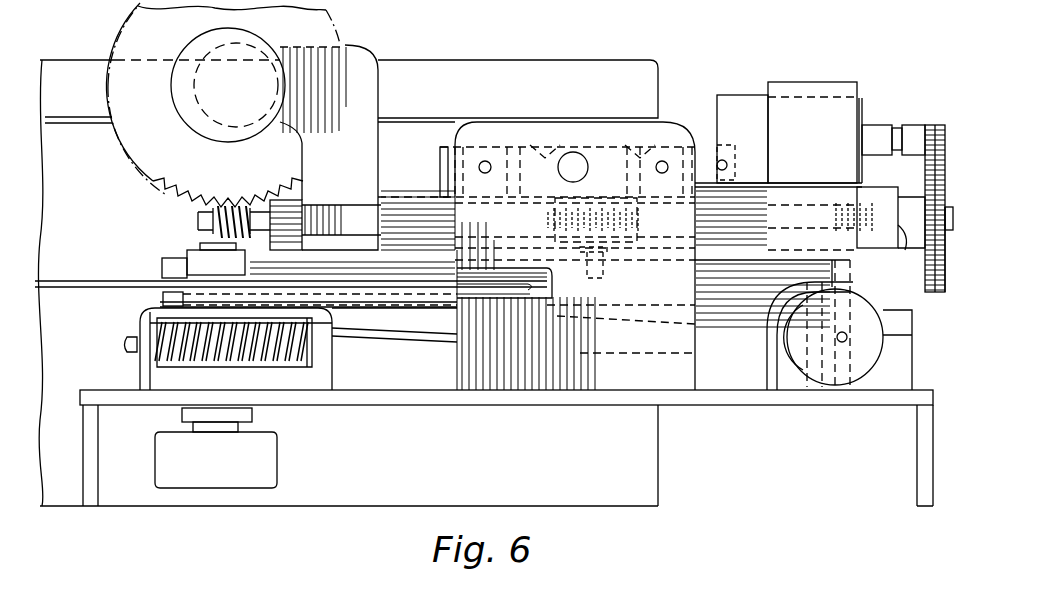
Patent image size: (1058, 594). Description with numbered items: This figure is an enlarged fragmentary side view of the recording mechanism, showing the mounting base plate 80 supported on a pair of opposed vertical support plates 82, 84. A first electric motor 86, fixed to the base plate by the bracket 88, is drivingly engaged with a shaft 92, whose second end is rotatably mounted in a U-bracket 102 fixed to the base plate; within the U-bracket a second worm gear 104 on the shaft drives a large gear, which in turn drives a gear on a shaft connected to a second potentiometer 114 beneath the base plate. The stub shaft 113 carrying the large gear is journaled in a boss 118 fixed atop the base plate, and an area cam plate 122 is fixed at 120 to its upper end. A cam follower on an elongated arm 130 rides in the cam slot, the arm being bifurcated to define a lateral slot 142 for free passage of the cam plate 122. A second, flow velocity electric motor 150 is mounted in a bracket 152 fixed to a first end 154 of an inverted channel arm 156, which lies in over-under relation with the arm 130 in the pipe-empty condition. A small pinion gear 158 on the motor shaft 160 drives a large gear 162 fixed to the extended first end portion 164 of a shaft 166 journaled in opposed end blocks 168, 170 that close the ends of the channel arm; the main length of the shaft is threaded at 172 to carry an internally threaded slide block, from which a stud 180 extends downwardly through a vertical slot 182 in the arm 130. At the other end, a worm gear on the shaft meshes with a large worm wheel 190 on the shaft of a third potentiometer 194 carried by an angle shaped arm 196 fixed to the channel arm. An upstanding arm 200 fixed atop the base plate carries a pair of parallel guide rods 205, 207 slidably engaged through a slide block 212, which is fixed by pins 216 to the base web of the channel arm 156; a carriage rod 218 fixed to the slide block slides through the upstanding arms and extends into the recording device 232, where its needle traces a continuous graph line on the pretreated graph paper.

The mounting base plate 80 is at (432, 405).
The vertical support plate 82 is at (95, 462).
The vertical support plate 84 is at (917, 446).
The first electric motor 86 is at (870, 352).
The bracket 88 is at (786, 372).
The shaft 92 is at (407, 342).
The U-bracket 102 is at (332, 356).
The second worm gear 104 is at (290, 360).
The stub shaft 113 is at (205, 247).
The second potentiometer 114 is at (228, 470).
The boss 118 is at (202, 364).
The fixing point 120 is at (163, 298).
The area cam plate 122 is at (112, 268).
The elongated arm 130 is at (400, 308).
The lateral slot 142 is at (537, 287).
The flow velocity electric motor 150 is at (752, 126).
The bracket 152 is at (836, 65).
The first end 154 is at (882, 197).
The inverted channel arm 156 is at (410, 190).
The small pinion gear 158 is at (932, 124).
The motor shaft 160 is at (897, 127).
The large gear 162 is at (938, 294).
The extended first end portion 164 is at (922, 262).
The shaft 166 is at (866, 250).
The end block 168 is at (860, 262).
The end block 170 is at (300, 188).
The threaded portion 172 is at (648, 216).
The stud 180 is at (608, 270).
The vertical slot 182 is at (448, 297).
The large worm wheel 190 is at (175, 190).
The third potentiometer 194 is at (237, 135).
The angle shaped arm 196 is at (357, 133).
The upstanding arm 200 is at (458, 390).
The guide rod 205 is at (485, 160).
The guide rod 207 is at (662, 160).
The slide block 212 is at (535, 143).
The pins 216 is at (440, 165).
The carriage rod 218 is at (573, 152).
The recording device 232 is at (590, 52).